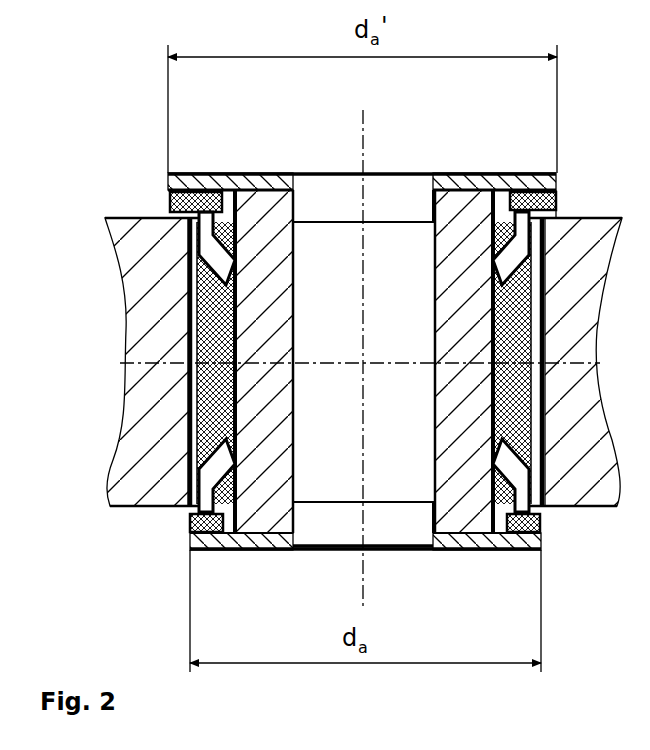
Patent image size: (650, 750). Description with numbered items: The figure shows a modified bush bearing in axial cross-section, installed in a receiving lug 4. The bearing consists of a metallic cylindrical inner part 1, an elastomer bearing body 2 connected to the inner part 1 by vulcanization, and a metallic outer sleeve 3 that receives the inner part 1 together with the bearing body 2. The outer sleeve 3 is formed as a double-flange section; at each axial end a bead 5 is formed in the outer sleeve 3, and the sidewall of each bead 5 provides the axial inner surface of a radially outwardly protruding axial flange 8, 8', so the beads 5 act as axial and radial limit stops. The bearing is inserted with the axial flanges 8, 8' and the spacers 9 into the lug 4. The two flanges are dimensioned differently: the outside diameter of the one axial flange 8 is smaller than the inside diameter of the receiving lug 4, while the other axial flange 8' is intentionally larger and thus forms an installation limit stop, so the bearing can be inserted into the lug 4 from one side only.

The inner part 1 is at (465, 245).
The elastomer bearing body 2 is at (512, 292).
The outer sleeve 3 is at (539, 424).
The receiving lug 4 is at (155, 392).
The bead 5 is at (190, 508).
The axial flange 8 is at (312, 558).
The axial flange 8' is at (320, 176).
The spacer 9 is at (258, 181).